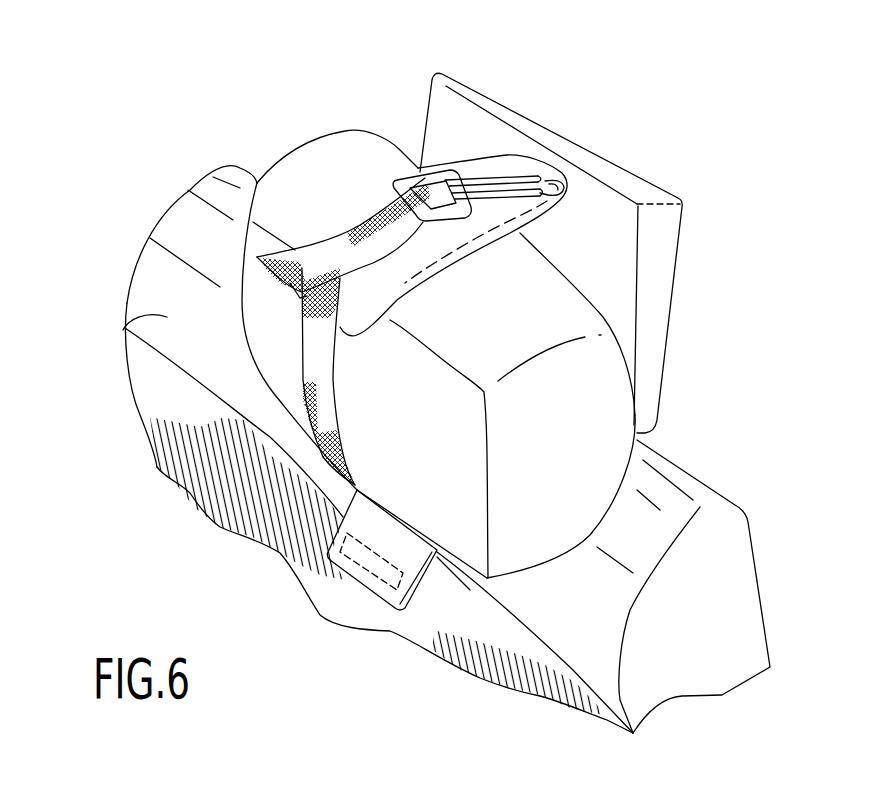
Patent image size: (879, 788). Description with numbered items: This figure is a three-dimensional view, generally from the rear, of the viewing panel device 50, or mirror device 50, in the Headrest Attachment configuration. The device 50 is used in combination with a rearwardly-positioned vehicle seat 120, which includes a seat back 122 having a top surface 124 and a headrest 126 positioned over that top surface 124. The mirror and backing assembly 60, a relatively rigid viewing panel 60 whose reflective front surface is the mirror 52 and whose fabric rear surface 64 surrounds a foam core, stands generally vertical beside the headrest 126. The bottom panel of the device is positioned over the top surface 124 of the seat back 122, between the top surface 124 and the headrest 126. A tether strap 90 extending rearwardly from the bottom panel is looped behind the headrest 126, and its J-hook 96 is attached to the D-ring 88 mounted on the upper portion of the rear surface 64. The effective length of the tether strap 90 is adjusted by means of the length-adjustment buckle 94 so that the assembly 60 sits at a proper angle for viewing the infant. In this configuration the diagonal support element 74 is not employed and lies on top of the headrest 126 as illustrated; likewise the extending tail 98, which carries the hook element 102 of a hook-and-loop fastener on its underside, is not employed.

The viewing panel device 50 is at (315, 98).
The mirror 52 is at (676, 295).
The mirror and backing assembly 60 is at (567, 152).
The rear surface 64 is at (592, 263).
The diagonal support element 74 is at (438, 242).
The D-ring 88 is at (502, 168).
The tether strap 90 is at (322, 378).
The length-adjustment buckle 94 is at (397, 177).
The J-hook 96 is at (477, 183).
The extending tail 98 is at (363, 513).
The hook element 102 is at (347, 577).
The vehicle seat 120 is at (118, 457).
The seat back 122 is at (125, 328).
The top surface 124 is at (217, 185).
The headrest 126 is at (575, 423).